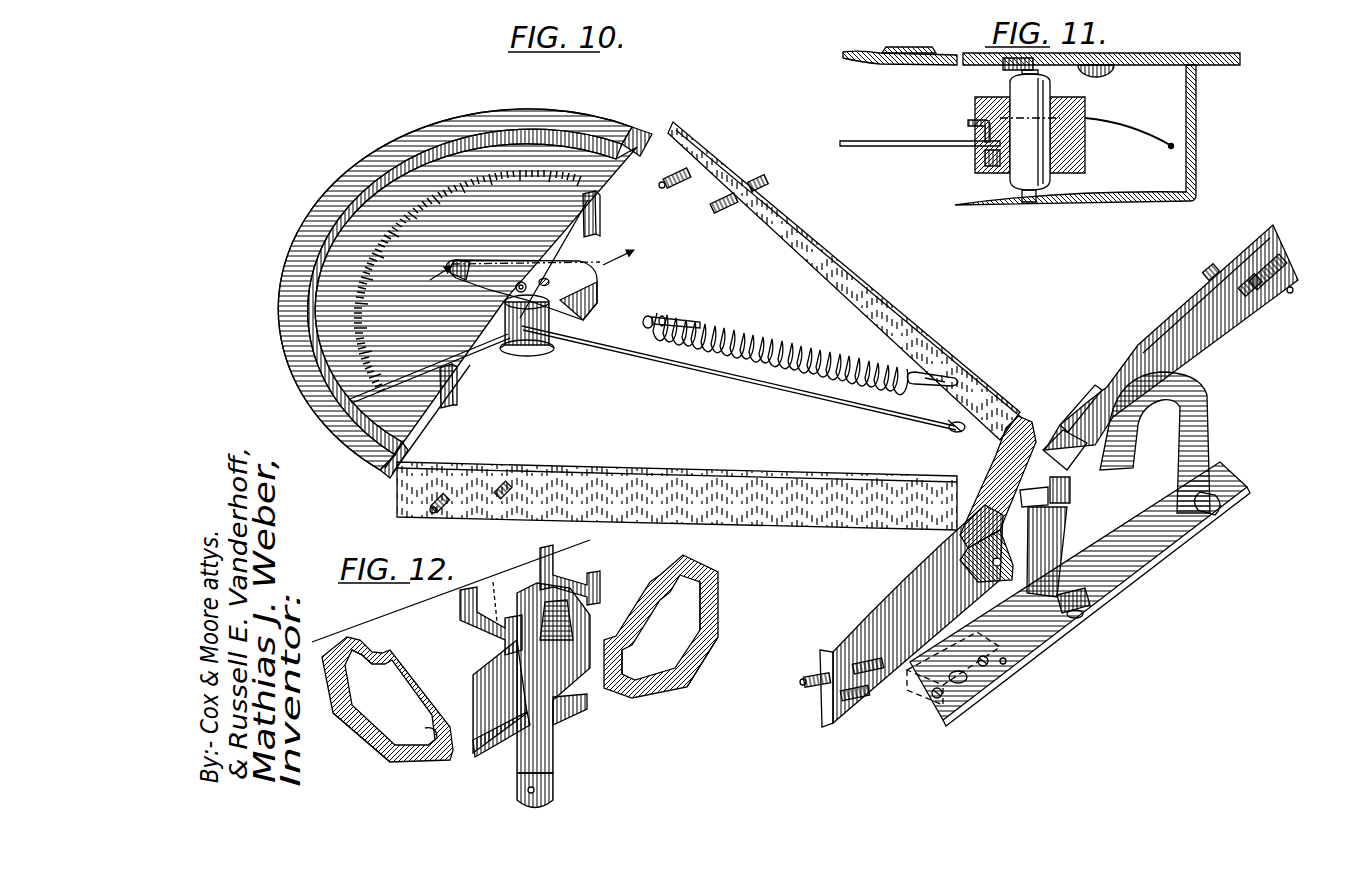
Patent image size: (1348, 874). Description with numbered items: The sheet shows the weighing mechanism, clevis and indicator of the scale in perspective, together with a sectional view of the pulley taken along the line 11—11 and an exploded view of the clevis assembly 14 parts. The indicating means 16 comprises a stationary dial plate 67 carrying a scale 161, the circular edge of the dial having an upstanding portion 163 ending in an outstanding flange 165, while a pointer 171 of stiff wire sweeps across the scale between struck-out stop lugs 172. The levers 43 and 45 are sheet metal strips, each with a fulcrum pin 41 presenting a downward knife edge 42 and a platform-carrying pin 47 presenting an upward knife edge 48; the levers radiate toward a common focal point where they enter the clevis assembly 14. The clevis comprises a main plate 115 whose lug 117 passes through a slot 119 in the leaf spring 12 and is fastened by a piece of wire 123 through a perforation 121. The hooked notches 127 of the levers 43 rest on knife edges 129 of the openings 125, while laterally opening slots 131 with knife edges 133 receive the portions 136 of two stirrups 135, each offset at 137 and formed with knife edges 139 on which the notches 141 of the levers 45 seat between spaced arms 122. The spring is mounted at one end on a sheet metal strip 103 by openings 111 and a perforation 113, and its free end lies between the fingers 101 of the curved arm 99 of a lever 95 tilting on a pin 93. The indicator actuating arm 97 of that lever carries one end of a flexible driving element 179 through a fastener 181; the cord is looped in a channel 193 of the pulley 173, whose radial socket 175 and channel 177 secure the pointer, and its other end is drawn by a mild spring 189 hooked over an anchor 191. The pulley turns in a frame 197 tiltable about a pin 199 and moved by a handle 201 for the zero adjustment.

In FIG. 10, the frame 11 is at (541, 271).
In FIG. 10, the leaf spring 12 is at (1113, 577).
In FIG. 10, the switch assembly 14 is at (1112, 524).
In FIG. 12, the switch assembly 14 is at (612, 770).
In FIG. 10, the indicating means 16 is at (362, 159).
In FIG. 10, the fulcrum pin 41 is at (715, 212).
In FIG. 10, the knife edge 42 is at (750, 192).
In FIG. 10, the lever 43 is at (837, 310).
In FIG. 10, the lever 45 is at (1167, 320).
In FIG. 10, the platform-carrying pin 47 is at (660, 190).
In FIG. 10, the knife edge 48 is at (667, 172).
In FIG. 10, the dial plate 67 is at (590, 143).
In FIG. 10, the pin 93 is at (1025, 567).
In FIG. 10, the lever 95 is at (990, 578).
In FIG. 11, the lever 95 is at (1049, 180).
In FIG. 10, the indicator actuating arm 97 is at (997, 468).
In FIG. 10, the arm 99 is at (1190, 408).
In FIG. 10, the fingers 101 is at (1220, 512).
In FIG. 10, the strip of sheet metal 103 is at (985, 663).
In FIG. 10, the openings 111 is at (985, 666).
In FIG. 10, the perforation 113 is at (962, 684).
In FIG. 10, the main plate 115 is at (1010, 620).
In FIG. 12, the main plate 115 is at (553, 740).
In FIG. 12, the lug 117 is at (540, 780).
In FIG. 10, the slot 119 is at (1092, 598).
In FIG. 12, the perforation 121 is at (520, 797).
In FIG. 10, the spaced arms 122 is at (1072, 488).
In FIG. 12, the spaced arms 122 is at (593, 570).
In FIG. 10, the piece of wire 123 is at (1078, 618).
In FIG. 12, the openings 125 is at (517, 653).
In FIG. 10, the notches 127 is at (1050, 500).
In FIG. 12, the knife edges 129 is at (508, 592).
In FIG. 12, the slots 131 is at (477, 747).
In FIG. 12, the knife edges 133 is at (545, 652).
In FIG. 10, the stirrups 135 is at (1047, 447).
In FIG. 12, the stirrups 135 is at (372, 745).
In FIG. 12, the portions 136 is at (430, 740).
In FIG. 12, the offset 137 is at (407, 663).
In FIG. 12, the knife edges 139 is at (698, 570).
In FIG. 10, the notches 141 is at (1068, 432).
In FIG. 10, the scale 161 is at (432, 195).
In FIG. 10, the upstanding portion 163 is at (514, 140).
In FIG. 10, the outstanding flange 165 is at (332, 222).
In FIG. 10, the pointer 171 is at (408, 372).
In FIG. 11, the pointer 171 is at (935, 137).
In FIG. 10, the lugs 172 is at (592, 224).
In FIG. 11, the pulley 173 is at (1087, 105).
In FIG. 11, the radial socket 175 is at (995, 172).
In FIG. 11, the channel 177 is at (978, 160).
In FIG. 10, the flexible driving element 179 is at (718, 372).
In FIG. 11, the flexible driving element 179 is at (1198, 137).
In FIG. 10, the fasteners 181 is at (685, 320).
In FIG. 10, the mild spring 189 is at (748, 336).
In FIG. 10, the anchor 191 is at (952, 377).
In FIG. 11, the channel 193 is at (992, 97).
In FIG. 10, the frame 197 is at (577, 276).
In FIG. 10, the pin 199 is at (540, 353).
In FIG. 11, the pin 199 is at (1115, 74).
In FIG. 10, the handle 201 is at (458, 262).
In FIG. 11, the handle 201 is at (848, 60).